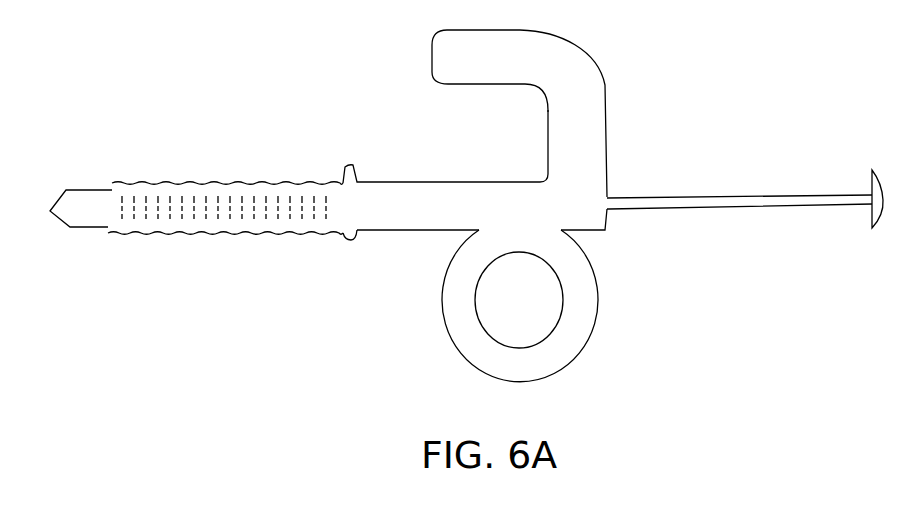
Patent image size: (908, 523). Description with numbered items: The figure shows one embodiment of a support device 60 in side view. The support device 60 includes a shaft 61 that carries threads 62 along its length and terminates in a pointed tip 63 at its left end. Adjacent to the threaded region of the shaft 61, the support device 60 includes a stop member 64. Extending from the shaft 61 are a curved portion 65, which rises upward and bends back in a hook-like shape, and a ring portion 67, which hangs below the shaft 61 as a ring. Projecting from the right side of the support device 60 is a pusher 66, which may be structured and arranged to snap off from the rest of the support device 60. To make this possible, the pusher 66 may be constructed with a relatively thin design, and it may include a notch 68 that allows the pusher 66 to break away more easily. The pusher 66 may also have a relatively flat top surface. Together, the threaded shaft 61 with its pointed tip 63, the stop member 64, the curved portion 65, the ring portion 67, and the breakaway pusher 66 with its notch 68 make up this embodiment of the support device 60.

The support device 60 is at (340, 90).
The shaft 61 is at (425, 182).
The threads 62 is at (215, 183).
The pointed tip 63 is at (50, 211).
The stop member 64 is at (356, 237).
The curved portion 65 is at (578, 61).
The pusher 66 is at (720, 197).
The ring portion 67 is at (598, 316).
The notch 68 is at (622, 210).